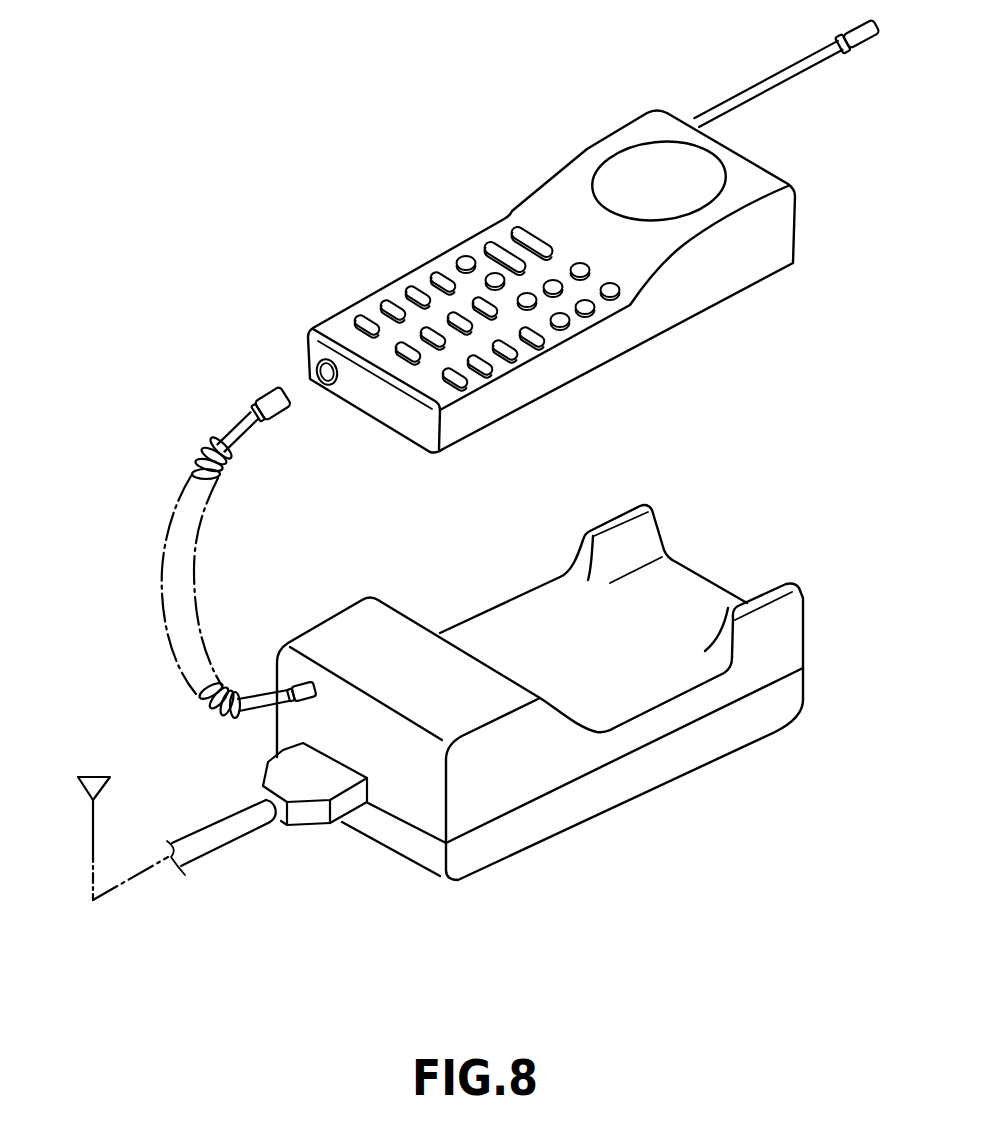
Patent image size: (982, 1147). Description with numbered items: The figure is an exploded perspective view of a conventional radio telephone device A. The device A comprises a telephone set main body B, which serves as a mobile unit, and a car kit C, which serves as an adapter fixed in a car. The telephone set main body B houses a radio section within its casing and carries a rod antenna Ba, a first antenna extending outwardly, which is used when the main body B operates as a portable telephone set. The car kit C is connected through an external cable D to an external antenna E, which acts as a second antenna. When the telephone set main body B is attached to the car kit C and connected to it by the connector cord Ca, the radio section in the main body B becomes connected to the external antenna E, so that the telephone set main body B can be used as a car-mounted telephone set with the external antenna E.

The radio telephone device A is at (305, 170).
The telephone set main body B is at (802, 221).
The rod antenna Ba is at (762, 74).
The car kit C is at (810, 641).
The connector cord Ca is at (197, 444).
The external cable D is at (243, 829).
The external antenna E is at (100, 763).